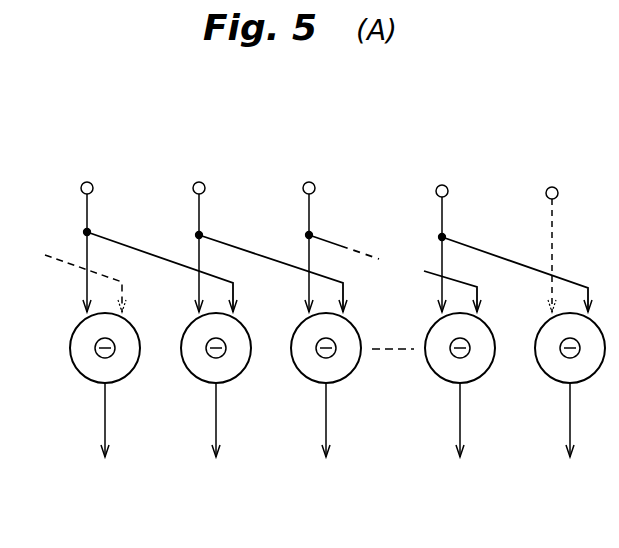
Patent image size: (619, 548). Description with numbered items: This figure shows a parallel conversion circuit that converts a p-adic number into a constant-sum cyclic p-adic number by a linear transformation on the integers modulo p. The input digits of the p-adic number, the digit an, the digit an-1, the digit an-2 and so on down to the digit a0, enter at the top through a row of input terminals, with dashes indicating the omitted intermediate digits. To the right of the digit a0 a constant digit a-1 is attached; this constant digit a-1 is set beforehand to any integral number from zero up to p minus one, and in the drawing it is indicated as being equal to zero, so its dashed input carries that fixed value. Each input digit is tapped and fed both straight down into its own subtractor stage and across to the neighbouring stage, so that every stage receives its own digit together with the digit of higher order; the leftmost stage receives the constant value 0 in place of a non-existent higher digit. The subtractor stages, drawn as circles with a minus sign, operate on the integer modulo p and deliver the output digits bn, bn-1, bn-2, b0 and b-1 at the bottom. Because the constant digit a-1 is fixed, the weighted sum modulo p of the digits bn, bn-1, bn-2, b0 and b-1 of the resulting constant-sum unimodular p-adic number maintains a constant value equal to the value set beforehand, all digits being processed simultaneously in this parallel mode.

The zero constant input 0 is at (77, 277).
The p-adic digit a_n an is at (156, 226).
The p-adic digit a_n-1 an-1 is at (262, 226).
The p-adic digit a_n-2 an-2 is at (333, 226).
The p-adic digit a_0 a0 is at (508, 226).
The constant digit a_-1 a-1 is at (573, 226).
The constant-sum cyclic p-adic digit b_n bn is at (105, 408).
The constant-sum cyclic p-adic digit b_n-1 bn-1 is at (216, 408).
The constant-sum cyclic p-adic digit b_n-2 bn-2 is at (326, 408).
The constant-sum cyclic p-adic digit b_0 b0 is at (460, 408).
The constant-sum cyclic p-adic digit b_-1 b-1 is at (570, 408).